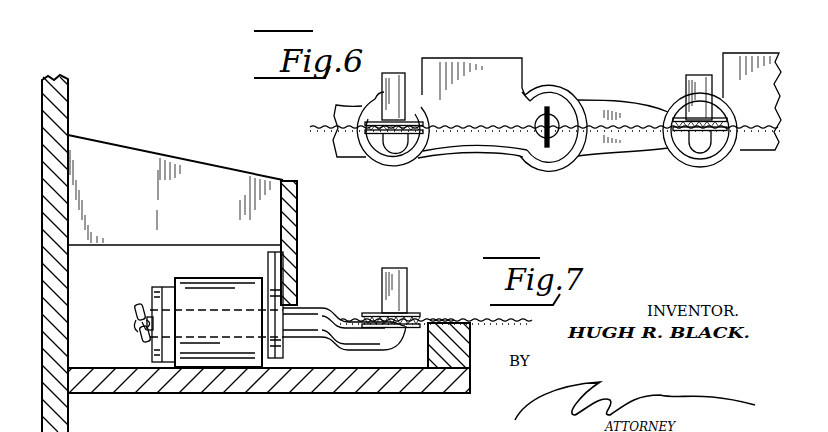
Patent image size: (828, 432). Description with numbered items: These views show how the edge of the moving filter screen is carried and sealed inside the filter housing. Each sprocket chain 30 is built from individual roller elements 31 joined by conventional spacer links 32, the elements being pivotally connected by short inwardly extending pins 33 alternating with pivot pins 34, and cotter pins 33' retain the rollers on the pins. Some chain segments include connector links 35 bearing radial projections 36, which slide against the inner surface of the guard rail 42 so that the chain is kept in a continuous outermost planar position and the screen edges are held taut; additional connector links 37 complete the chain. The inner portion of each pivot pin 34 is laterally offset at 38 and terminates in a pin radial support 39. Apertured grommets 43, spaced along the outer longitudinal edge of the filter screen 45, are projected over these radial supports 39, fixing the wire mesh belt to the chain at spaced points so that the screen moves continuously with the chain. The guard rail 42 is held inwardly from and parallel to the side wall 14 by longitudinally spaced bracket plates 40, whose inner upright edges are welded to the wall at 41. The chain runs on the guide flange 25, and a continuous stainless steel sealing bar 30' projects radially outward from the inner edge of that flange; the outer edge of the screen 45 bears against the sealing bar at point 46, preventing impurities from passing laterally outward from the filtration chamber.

In FIG. 7, the side wall 14 is at (48, 202).
In FIG. 7, the guide flange 25 is at (373, 393).
In FIG. 7, the sprocket chain 30 is at (124, 315).
In FIG. 7, the sealing bar 30' is at (472, 345).
In FIG. 7, the roller element 31 is at (197, 286).
In FIG. 7, the spacer link 32 is at (170, 284).
In FIG. 6, the spacer link 32 is at (606, 110).
In FIG. 6, the pin 33 is at (563, 148).
In FIG. 7, the cotter pin 33' is at (119, 343).
In FIG. 6, the cotter pin 33' is at (513, 170).
In FIG. 7, the pivot pin 34 is at (316, 309).
In FIG. 6, the pivot pin 34 is at (686, 165).
In FIG. 7, the connector link 35 is at (274, 368).
In FIG. 6, the connector link 35 is at (505, 98).
In FIG. 7, the radial projection 36 is at (275, 252).
In FIG. 6, the radial projection 36 is at (480, 58).
In FIG. 7, the connector link 37 is at (148, 300).
In FIG. 7, the lateral offset 38 is at (340, 346).
In FIG. 7, the pin radial support 39 is at (397, 275).
In FIG. 6, the pin radial support 39 is at (396, 78).
In FIG. 7, the bracket plate 40 is at (118, 148).
In FIG. 7, the weld connection 41 is at (68, 172).
In FIG. 7, the guard rail 42 is at (297, 226).
In FIG. 7, the grommet 43 is at (370, 310).
In FIG. 6, the grommet 43 is at (423, 122).
In FIG. 7, the filter screen 45 is at (478, 318).
In FIG. 6, the filter screen 45 is at (326, 113).
In FIG. 7, the screen bearing point 46 is at (447, 318).